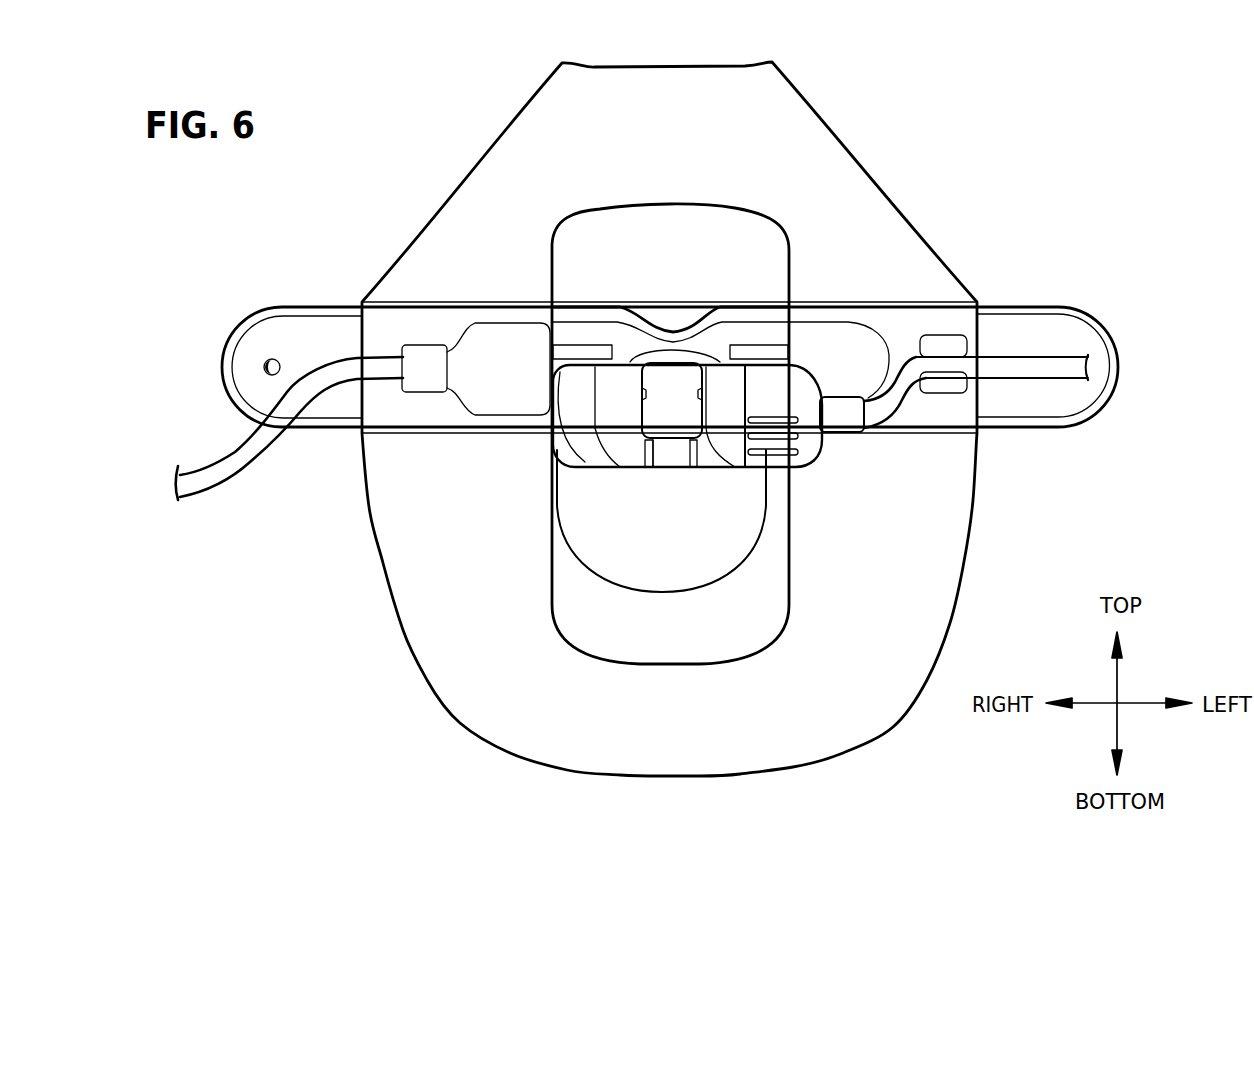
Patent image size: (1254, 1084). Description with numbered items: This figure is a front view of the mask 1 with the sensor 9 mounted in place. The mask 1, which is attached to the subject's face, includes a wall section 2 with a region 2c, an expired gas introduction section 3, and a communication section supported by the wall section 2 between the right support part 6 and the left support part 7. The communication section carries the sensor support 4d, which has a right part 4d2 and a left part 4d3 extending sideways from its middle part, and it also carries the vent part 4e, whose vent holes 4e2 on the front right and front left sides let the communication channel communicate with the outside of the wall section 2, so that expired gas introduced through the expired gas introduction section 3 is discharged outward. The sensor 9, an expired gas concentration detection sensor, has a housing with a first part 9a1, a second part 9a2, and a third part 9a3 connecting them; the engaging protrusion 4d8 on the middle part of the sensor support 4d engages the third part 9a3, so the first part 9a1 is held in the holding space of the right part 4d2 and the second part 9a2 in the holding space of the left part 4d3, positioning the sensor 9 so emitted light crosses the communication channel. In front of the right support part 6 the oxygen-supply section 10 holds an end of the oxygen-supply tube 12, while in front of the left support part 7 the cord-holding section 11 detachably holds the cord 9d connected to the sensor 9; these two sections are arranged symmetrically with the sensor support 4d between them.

The mask 1 is at (983, 140).
The wall section 2 is at (813, 143).
The opening of body 2c is at (552, 238).
The expired gas introduction section 3 is at (700, 565).
The sensor support 4d is at (697, 353).
The right part 4d2 is at (617, 440).
The left part 4d3 is at (720, 445).
The engaging protrusion 4d8 is at (670, 447).
The vent part 4e is at (668, 380).
The vent hole 4e2 is at (632, 395).
The right support part 6 is at (424, 320).
The left support part 7 is at (903, 316).
The sensor 9 is at (824, 374).
The first part 9a1 is at (572, 445).
The second part 9a2 is at (818, 455).
The third part 9a3 is at (690, 455).
The cord 9d is at (882, 427).
The oxygen-supply section 10 is at (420, 345).
The cord-holding section 11 is at (958, 342).
The oxygen-supply tube 12 is at (242, 474).